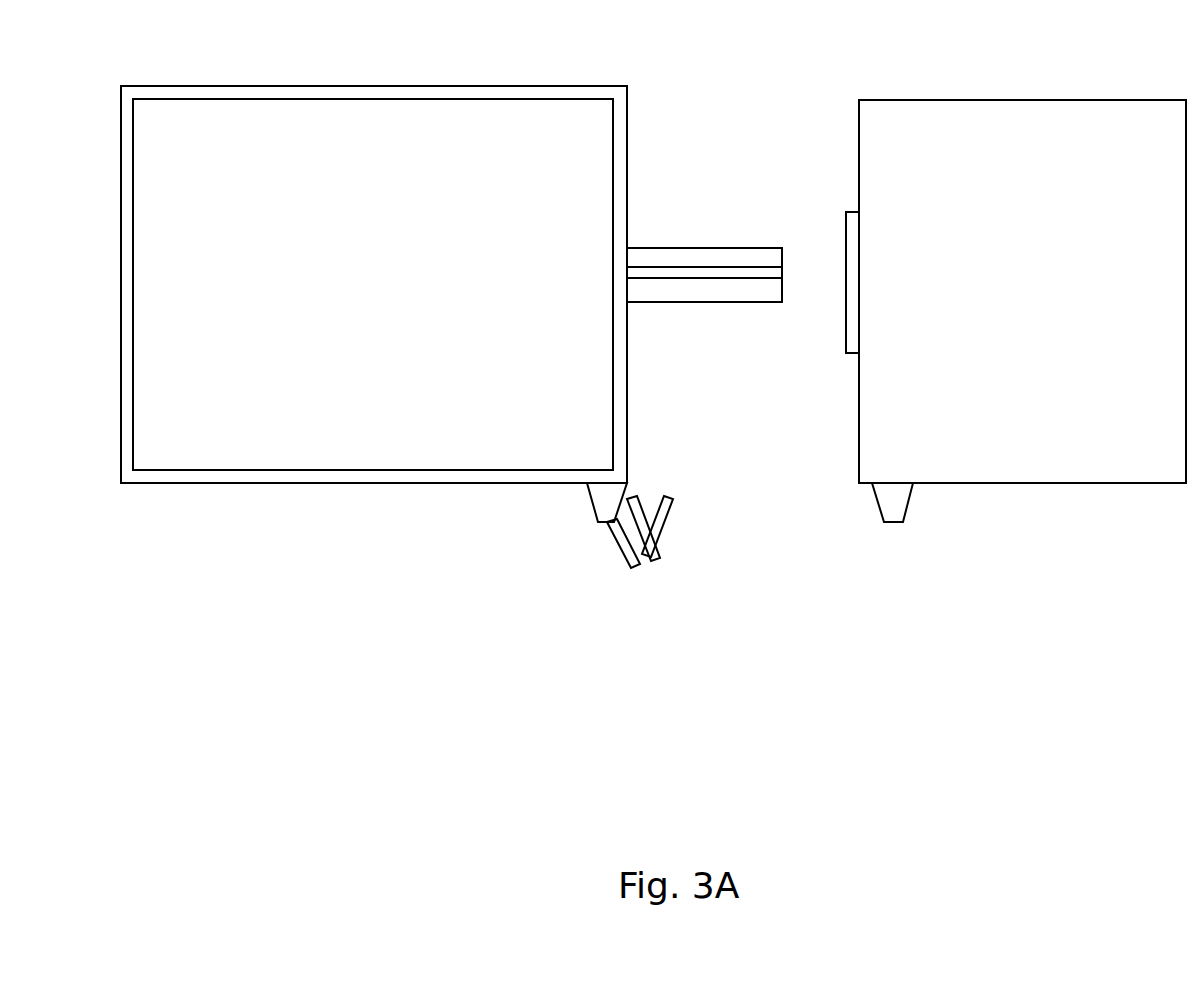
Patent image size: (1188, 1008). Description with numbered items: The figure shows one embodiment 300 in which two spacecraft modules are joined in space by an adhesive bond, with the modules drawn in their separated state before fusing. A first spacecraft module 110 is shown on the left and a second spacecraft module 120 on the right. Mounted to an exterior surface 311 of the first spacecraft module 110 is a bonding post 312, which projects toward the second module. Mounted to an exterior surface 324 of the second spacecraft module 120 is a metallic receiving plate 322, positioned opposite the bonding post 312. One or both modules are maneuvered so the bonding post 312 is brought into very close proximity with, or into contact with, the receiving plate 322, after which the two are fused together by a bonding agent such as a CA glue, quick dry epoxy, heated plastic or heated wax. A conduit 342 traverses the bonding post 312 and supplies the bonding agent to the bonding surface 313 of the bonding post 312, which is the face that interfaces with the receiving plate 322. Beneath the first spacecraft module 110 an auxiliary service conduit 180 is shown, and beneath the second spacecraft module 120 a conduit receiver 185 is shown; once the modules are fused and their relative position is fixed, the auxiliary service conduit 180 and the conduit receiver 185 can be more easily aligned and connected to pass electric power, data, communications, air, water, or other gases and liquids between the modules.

The embodiment 300 is at (746, 706).
The first spacecraft module 110 is at (374, 86).
The second spacecraft module 120 is at (1022, 100).
The exterior surface 311 is at (628, 394).
The bonding post 312 is at (705, 248).
The conduit 342 is at (640, 280).
The bonding surface 313 is at (783, 288).
The receiving plate 322 is at (853, 212).
The exterior surface 324 is at (859, 405).
The conduit receiver 185 is at (908, 503).
The auxiliary service conduit 180 is at (598, 534).